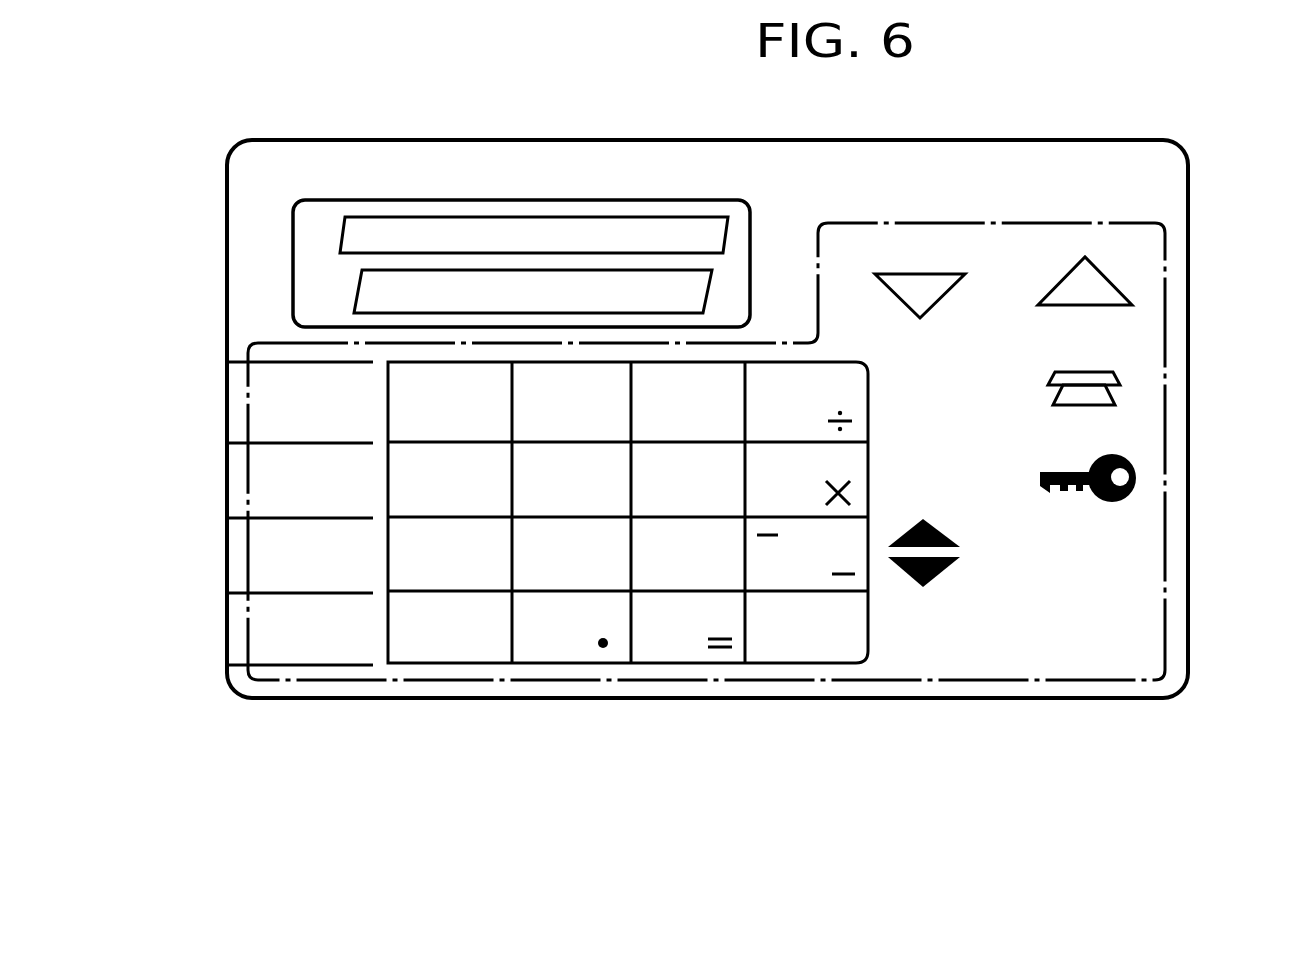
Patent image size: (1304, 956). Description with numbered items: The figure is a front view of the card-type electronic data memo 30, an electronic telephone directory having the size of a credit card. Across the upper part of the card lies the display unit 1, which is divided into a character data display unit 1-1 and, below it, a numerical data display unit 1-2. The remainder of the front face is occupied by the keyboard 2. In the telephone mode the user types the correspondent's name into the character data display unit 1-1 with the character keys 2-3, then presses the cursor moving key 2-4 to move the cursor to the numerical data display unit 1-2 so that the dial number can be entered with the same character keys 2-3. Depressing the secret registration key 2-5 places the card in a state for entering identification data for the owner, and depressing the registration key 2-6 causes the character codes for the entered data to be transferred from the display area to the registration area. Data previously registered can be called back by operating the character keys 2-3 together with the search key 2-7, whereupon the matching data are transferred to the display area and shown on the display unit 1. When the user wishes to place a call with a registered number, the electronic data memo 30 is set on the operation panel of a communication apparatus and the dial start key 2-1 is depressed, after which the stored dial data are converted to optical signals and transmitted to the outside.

The electronic data memo 30 is at (748, 708).
The display unit 1 is at (293, 243).
The character data display unit 1-1 is at (448, 216).
The numerical data display unit 1-2 is at (620, 270).
The keyboard 2 is at (248, 343).
The character keys 2-3 is at (490, 665).
The search key 2-7 is at (1000, 277).
The dial start key 2-1 is at (1130, 385).
The secret registration key 2-5 is at (1140, 477).
The cursor moving key 2-4 is at (942, 583).
The registration key 2-6 is at (1133, 608).